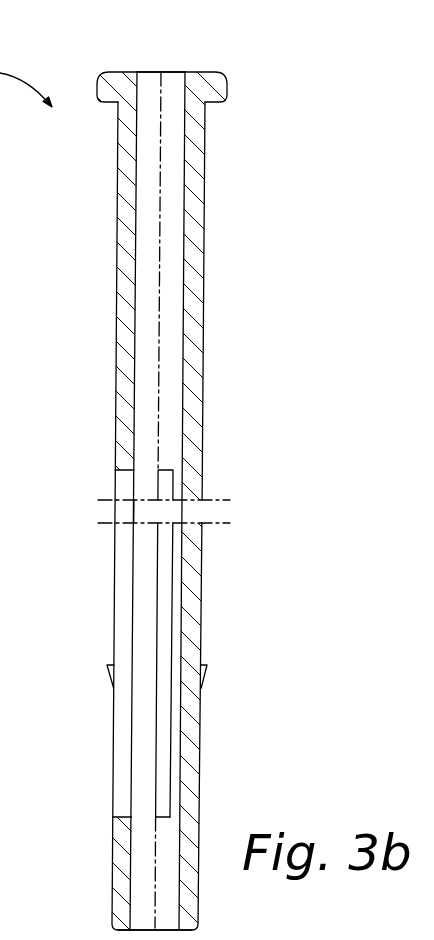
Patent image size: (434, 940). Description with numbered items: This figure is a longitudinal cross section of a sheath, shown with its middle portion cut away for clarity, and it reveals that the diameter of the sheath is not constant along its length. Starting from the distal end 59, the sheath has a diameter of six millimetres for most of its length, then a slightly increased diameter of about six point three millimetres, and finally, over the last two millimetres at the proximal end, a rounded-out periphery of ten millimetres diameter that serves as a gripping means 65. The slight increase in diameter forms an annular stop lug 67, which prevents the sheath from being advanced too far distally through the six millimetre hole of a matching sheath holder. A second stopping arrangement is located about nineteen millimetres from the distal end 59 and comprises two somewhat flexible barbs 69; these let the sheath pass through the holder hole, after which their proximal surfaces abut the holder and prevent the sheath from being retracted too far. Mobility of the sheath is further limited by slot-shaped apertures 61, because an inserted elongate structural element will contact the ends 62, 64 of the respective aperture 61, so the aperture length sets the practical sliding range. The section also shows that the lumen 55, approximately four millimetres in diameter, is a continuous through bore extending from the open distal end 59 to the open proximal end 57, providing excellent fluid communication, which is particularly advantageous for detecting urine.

The lumen 55 is at (169, 250).
The open proximal end 57 is at (165, 72).
The distal end 59 is at (167, 932).
The slot-shaped apertures 61 is at (122, 567).
The aperture end 62 is at (120, 463).
The aperture end 64 is at (115, 814).
The gripping means 65 is at (218, 86).
The annular stop lug 67 is at (204, 320).
The barbs 69 is at (105, 670).